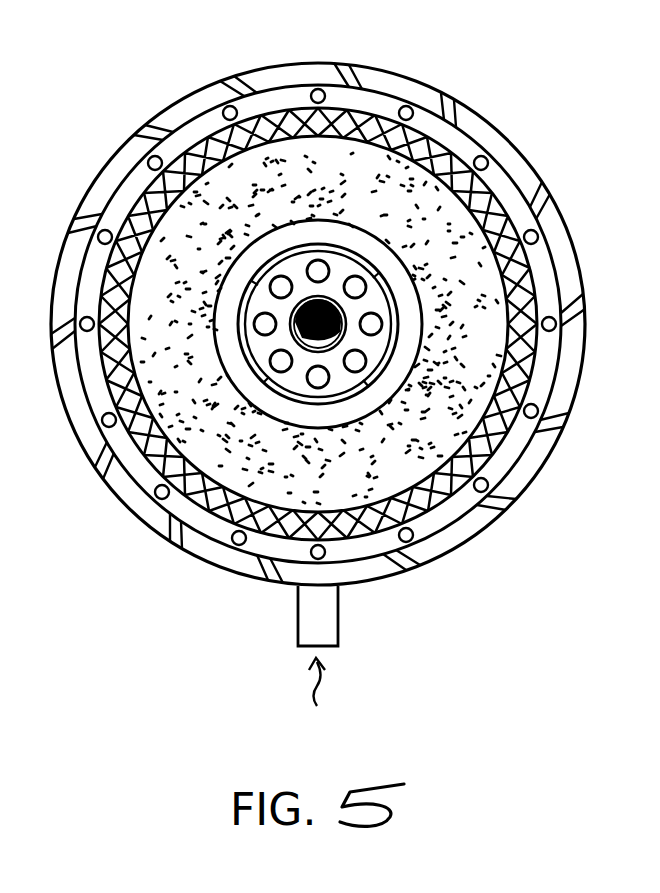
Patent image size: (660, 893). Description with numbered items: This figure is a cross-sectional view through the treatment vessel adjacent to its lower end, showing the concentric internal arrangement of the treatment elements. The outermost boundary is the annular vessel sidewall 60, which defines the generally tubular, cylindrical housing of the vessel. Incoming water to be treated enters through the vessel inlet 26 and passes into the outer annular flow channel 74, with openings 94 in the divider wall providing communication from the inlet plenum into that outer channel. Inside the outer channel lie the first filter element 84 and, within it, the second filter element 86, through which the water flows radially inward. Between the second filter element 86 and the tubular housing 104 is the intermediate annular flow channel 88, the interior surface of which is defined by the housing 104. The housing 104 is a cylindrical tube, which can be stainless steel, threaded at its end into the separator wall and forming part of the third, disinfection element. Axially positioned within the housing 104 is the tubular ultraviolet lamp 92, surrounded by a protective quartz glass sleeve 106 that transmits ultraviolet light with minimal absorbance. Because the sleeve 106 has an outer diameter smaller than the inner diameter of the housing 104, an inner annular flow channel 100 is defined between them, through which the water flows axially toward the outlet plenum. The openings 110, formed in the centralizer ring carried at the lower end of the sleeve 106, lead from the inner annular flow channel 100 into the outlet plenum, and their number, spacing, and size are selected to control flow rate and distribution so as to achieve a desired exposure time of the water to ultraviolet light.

The vessel inlet 26 is at (298, 640).
The vessel sidewall 60 is at (98, 180).
The outer annular flow channel 74 is at (520, 198).
The first filter element 84 is at (264, 110).
The second filter element 86 is at (350, 205).
The intermediate annular flow channel 88 is at (397, 372).
The ultraviolet lamp 92 is at (314, 312).
The openings in divider wall 94 is at (150, 152).
The inner annular flow channel 100 is at (374, 306).
The tubular housing 104 is at (368, 265).
The quartz glass sleeve 106 is at (328, 352).
The openings in centralizer ring 110 is at (314, 385).